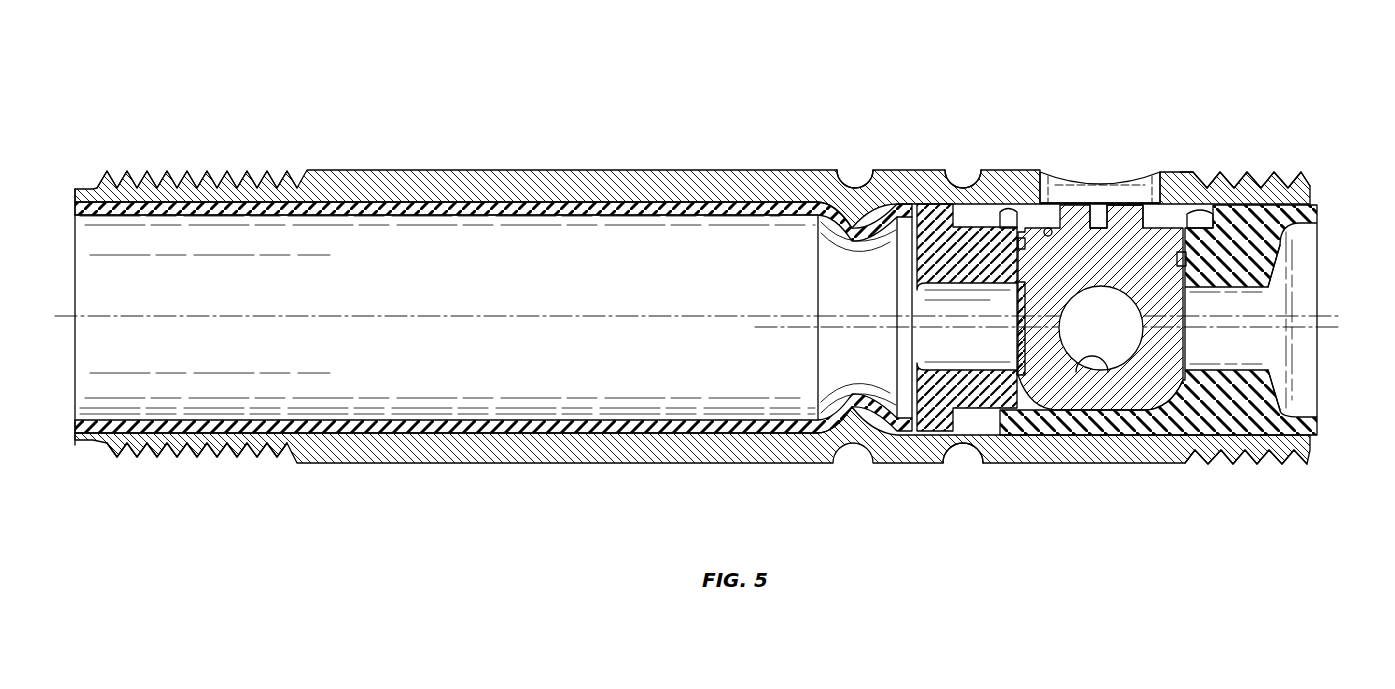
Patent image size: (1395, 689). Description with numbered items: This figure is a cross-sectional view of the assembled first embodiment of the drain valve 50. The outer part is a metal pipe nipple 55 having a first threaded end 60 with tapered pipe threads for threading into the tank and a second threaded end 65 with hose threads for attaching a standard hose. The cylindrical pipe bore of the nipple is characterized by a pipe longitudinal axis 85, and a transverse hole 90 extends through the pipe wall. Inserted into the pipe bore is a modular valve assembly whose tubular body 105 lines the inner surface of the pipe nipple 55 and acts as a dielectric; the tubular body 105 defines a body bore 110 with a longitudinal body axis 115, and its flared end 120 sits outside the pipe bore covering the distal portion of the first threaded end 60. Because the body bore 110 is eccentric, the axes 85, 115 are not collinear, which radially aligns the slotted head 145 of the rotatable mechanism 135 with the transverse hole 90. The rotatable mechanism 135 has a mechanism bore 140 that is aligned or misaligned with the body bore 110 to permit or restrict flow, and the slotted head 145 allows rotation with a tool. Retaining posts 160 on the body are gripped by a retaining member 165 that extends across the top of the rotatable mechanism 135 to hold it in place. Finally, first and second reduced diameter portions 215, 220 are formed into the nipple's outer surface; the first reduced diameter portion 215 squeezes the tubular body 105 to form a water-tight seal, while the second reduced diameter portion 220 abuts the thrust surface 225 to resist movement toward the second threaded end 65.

The drain valve 50 is at (652, 96).
The pipe nipple 55 is at (457, 184).
The first threaded end 60 is at (157, 173).
The second threaded end 65 is at (1280, 172).
The pipe longitudinal axis 85 is at (1307, 301).
The transverse hole 90 is at (1057, 187).
The tubular body 105 is at (628, 228).
The body bore 110 is at (512, 376).
The longitudinal body axis 115 is at (1307, 343).
The flared end 120 is at (77, 195).
The rotatable mechanism 135 is at (1127, 388).
The mechanism bore 140 is at (1085, 362).
The slotted head 145 is at (1122, 208).
The retaining posts 160 is at (1015, 222).
The retaining member 165 is at (1140, 212).
The first reduced diameter portion 215 is at (857, 176).
The second reduced diameter portion 220 is at (961, 172).
The thrust surface 225 is at (953, 451).